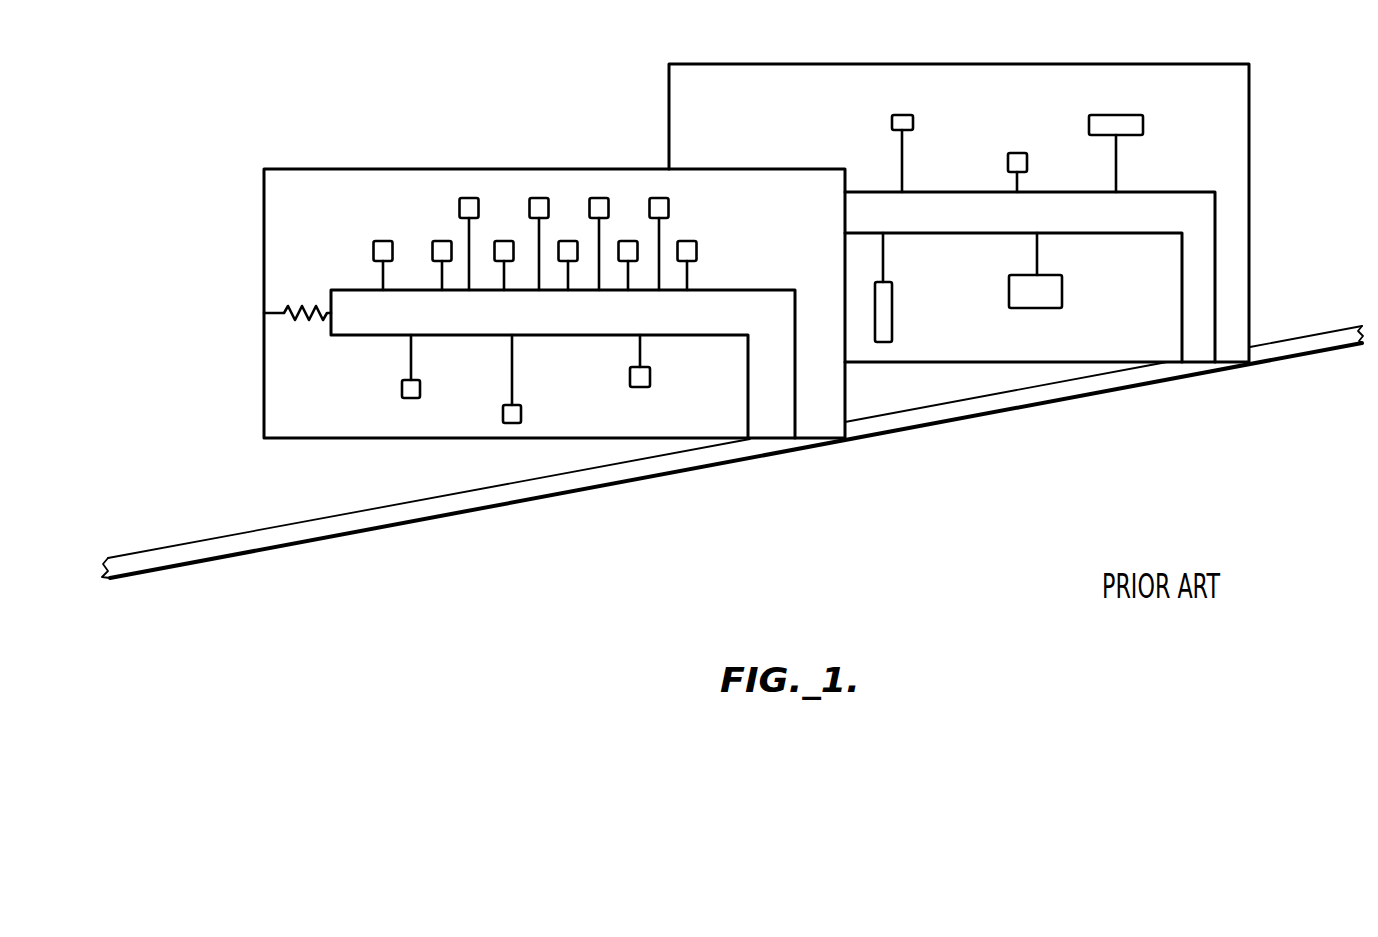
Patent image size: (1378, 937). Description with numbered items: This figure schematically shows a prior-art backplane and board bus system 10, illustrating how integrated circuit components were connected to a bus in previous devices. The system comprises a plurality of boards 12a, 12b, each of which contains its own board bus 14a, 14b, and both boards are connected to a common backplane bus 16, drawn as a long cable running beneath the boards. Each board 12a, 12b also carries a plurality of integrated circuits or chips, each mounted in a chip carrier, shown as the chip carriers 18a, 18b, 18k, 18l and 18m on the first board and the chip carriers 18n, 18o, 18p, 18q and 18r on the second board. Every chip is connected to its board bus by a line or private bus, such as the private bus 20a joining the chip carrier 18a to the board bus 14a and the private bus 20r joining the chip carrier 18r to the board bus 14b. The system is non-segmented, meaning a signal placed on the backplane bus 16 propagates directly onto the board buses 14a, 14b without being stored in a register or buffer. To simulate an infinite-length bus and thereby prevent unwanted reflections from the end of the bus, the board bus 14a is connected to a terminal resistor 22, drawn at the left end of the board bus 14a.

The backplane and board bus system 10 is at (1310, 180).
The board 12a is at (358, 169).
The board 12b is at (893, 64).
The board bus 14a is at (546, 327).
The board bus 14b is at (988, 228).
The backplane bus 16 is at (292, 537).
The chip carrier 18a is at (383, 241).
The chip carrier 18b is at (442, 241).
The chip carrier 18k is at (402, 389).
The chip carrier 18l is at (503, 414).
The chip carrier 18m is at (630, 378).
The chip carrier 18n is at (921, 98).
The chip carrier 18o is at (1017, 153).
The chip carrier 18p is at (1143, 115).
The chip carrier 18q is at (892, 302).
The chip carrier 18r is at (1062, 295).
The private bus 20a is at (383, 276).
The private bus 20r is at (1037, 257).
The terminal resistor 22 is at (293, 322).